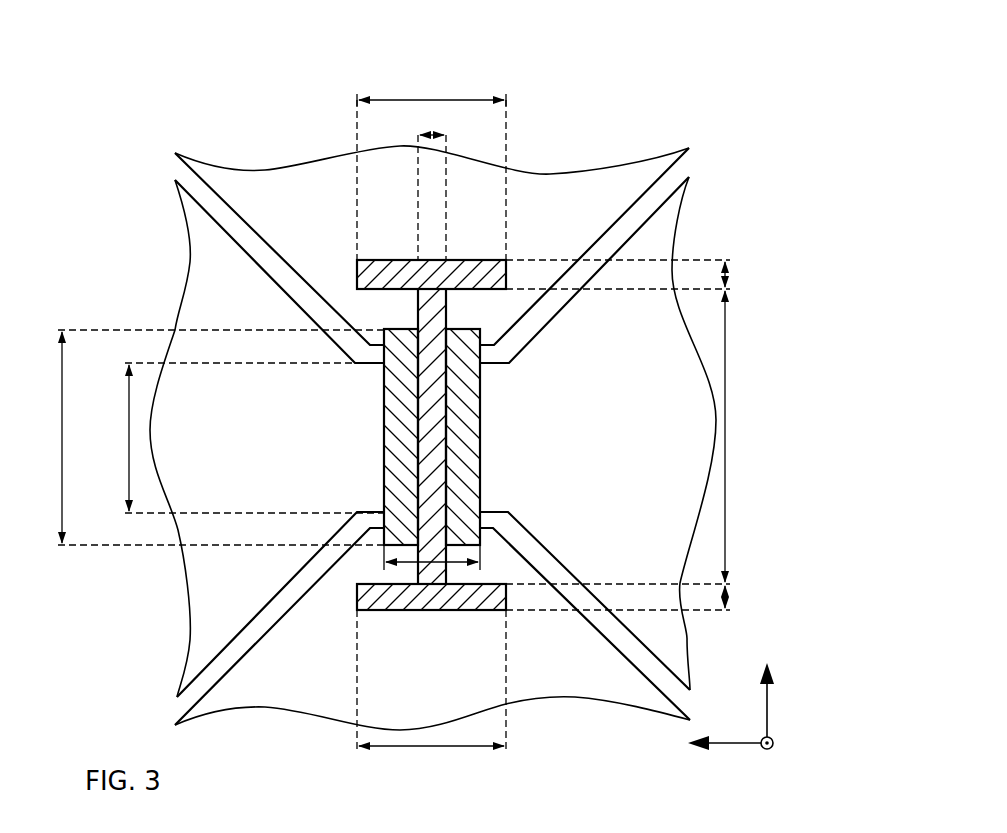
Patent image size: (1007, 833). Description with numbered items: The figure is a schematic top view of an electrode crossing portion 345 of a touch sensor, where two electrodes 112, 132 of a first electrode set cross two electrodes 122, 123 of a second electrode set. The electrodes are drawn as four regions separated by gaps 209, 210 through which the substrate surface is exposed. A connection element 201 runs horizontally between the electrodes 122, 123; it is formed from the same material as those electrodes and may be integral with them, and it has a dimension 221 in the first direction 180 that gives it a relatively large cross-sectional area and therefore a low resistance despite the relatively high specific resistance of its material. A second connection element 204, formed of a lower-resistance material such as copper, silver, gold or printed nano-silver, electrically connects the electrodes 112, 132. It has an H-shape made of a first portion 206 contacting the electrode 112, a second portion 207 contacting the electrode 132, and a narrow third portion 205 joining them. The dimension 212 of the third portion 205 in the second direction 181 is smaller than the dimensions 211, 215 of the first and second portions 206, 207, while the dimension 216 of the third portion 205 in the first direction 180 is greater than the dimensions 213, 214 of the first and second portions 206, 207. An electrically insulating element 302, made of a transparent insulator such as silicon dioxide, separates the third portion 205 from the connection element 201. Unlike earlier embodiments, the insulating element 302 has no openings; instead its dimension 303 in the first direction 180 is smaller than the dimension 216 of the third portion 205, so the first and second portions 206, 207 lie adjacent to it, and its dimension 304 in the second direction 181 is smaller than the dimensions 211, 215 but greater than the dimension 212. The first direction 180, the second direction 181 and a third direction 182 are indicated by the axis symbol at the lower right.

The electrode 112 is at (332, 202).
The electrode 122 is at (252, 314).
The electrode 123 is at (637, 364).
The electrode 132 is at (597, 684).
The first direction 180 is at (768, 700).
The second direction 181 is at (734, 745).
The third direction 182 is at (774, 744).
The connection element 201 is at (503, 439).
The connection element 204 is at (396, 411).
The third portion 205 is at (437, 442).
The first portion 206 is at (385, 259).
The second portion 207 is at (385, 611).
The gap 209 is at (172, 166).
The gap 210 is at (176, 710).
The dimension 211 is at (398, 98).
The dimension 212 is at (440, 133).
The dimension 213 is at (727, 273).
The dimension 214 is at (727, 598).
The dimension 215 is at (460, 748).
The dimension 216 is at (727, 375).
The dimension 221 is at (128, 439).
The electrically insulating element 302 is at (481, 490).
The dimension 303 is at (61, 439).
The dimension 304 is at (417, 567).
The electrode crossing portion 345 is at (748, 152).